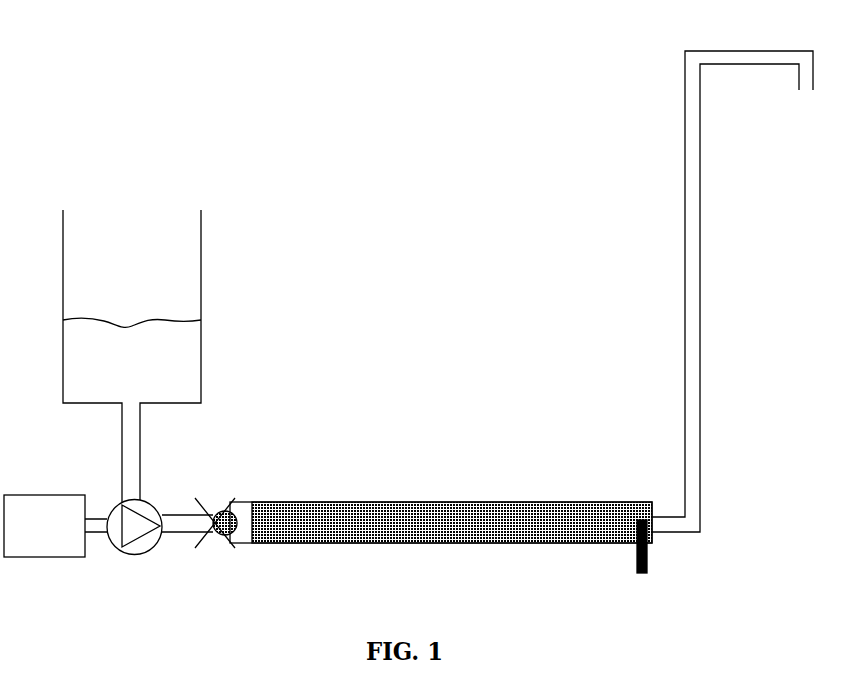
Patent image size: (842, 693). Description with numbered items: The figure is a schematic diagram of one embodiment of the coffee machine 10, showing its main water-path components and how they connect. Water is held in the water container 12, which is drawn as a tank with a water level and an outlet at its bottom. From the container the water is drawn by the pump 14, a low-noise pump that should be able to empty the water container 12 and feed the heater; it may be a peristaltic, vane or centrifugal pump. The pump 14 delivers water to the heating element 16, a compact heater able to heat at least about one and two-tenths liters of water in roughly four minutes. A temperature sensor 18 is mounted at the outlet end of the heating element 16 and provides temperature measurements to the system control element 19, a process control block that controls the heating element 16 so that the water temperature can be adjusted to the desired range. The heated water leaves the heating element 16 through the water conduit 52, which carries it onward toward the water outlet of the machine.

The coffee machine 10 is at (160, 124).
The water container 12 is at (203, 281).
The pump 14 is at (43, 495).
The heating element 16 is at (330, 502).
The temperature sensor 18 is at (648, 558).
The system control element 19 is at (133, 556).
The water conduit 52 is at (682, 264).